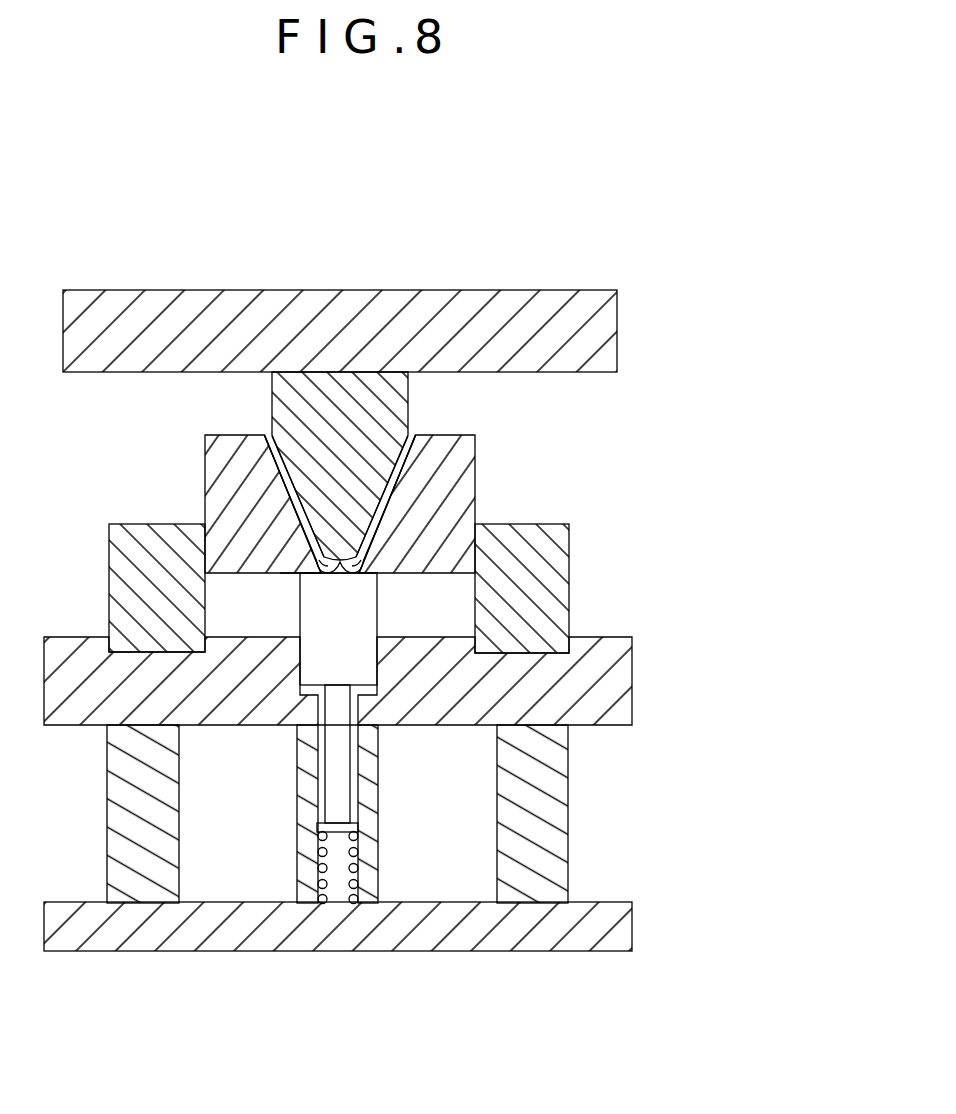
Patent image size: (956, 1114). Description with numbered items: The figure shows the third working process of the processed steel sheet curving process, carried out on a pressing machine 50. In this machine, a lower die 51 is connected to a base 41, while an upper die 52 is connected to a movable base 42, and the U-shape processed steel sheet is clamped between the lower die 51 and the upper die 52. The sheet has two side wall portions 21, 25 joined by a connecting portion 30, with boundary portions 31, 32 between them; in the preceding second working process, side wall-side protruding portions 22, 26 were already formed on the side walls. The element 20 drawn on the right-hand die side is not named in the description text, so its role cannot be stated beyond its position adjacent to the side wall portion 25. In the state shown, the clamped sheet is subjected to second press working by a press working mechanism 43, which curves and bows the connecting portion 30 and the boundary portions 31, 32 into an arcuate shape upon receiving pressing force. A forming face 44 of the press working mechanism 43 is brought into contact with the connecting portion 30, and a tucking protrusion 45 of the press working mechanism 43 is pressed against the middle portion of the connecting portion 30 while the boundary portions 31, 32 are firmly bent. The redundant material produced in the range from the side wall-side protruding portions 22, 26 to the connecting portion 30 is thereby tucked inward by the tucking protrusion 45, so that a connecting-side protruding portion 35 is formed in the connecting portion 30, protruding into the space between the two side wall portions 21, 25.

The pressing machine 50 is at (487, 250).
The movable base 42 is at (595, 372).
The upper die 52 is at (293, 390).
The lower die 51 is at (213, 453).
The side wall portion 21 is at (290, 490).
The side wall-side protruding portion 22 is at (298, 535).
The tucking protrusion 45 is at (305, 576).
The right die block 20 is at (461, 436).
The side wall portion 25 is at (392, 495).
The side wall-side protruding portion 26 is at (380, 533).
The connecting portion 30 is at (338, 537).
The boundary portion 31 is at (313, 575).
The boundary portion 32 is at (362, 577).
The forming face 44 is at (203, 558).
The base 41 is at (555, 557).
The press working mechanism 43 is at (370, 702).
The connecting-side protruding portion 35 is at (338, 576).